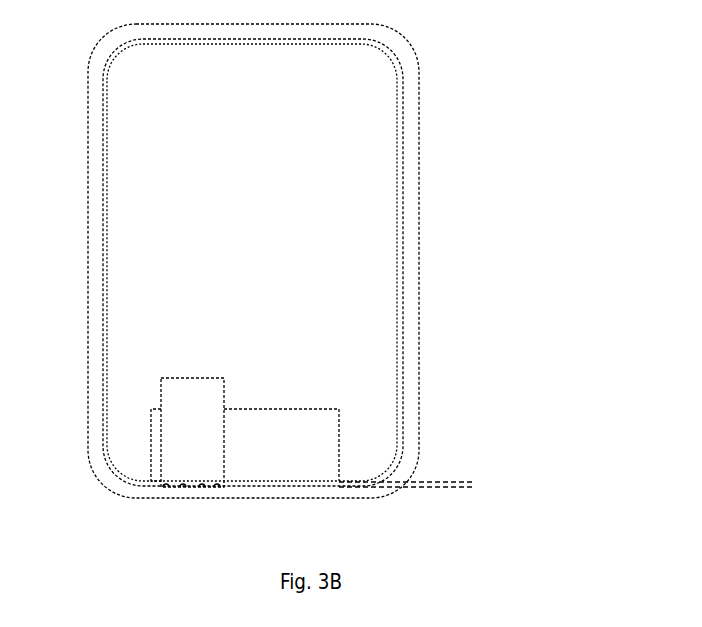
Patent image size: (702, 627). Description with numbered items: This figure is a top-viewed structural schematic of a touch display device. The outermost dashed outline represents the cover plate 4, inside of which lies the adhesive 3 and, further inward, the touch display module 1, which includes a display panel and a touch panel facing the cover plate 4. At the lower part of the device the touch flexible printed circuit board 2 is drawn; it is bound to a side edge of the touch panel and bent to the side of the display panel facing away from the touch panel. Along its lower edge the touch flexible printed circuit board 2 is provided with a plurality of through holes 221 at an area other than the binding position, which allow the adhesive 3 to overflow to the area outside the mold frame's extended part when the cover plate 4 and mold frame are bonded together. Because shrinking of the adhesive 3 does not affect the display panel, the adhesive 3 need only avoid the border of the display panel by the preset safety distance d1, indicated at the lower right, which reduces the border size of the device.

The touch display module 1 is at (382, 183).
The touch flexible printed circuit board 2 is at (194, 394).
The adhesive 3 is at (405, 266).
The cover plate 4 is at (419, 103).
The through holes 221 is at (186, 489).
The preset safety distance d1 is at (462, 488).